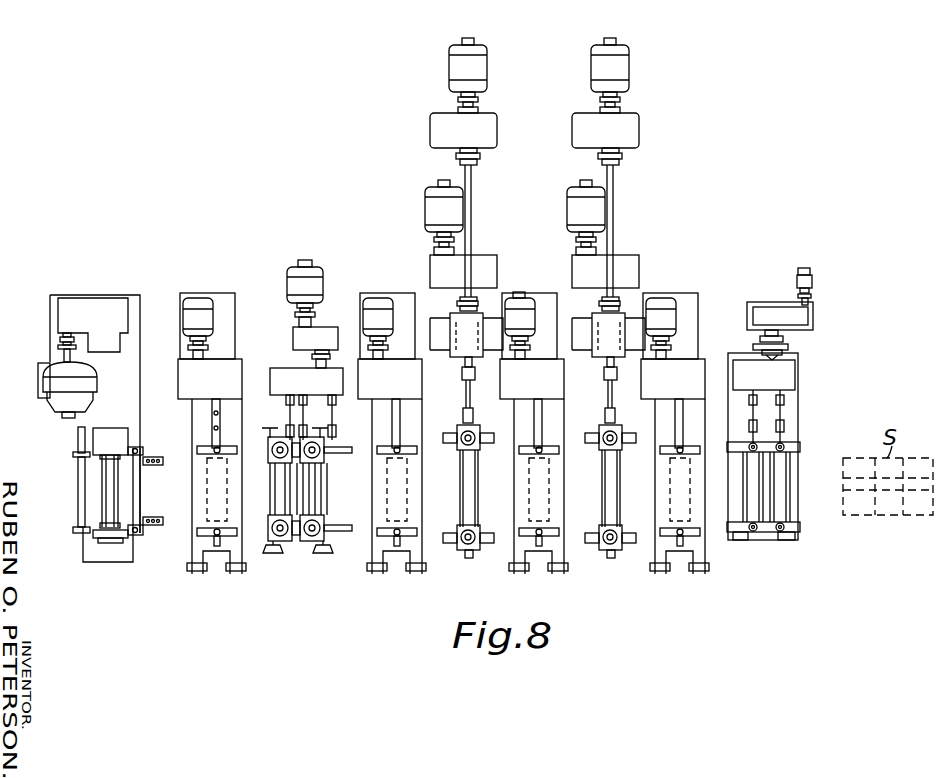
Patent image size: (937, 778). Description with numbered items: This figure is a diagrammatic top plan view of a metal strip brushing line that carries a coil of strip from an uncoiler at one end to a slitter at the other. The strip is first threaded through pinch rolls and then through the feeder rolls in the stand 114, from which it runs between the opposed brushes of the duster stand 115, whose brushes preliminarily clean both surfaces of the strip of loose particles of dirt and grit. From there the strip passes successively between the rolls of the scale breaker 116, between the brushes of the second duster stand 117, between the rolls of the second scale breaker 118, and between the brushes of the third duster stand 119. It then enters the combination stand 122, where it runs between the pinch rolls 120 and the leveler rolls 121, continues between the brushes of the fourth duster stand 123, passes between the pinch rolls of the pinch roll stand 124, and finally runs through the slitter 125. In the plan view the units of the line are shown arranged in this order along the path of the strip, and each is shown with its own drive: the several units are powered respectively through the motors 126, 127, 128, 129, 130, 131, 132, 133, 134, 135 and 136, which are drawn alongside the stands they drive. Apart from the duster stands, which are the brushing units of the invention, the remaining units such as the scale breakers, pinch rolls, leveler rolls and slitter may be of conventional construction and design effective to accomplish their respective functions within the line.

The stand 114 is at (790, 417).
The duster stand 115 is at (710, 543).
The scale breaker 116 is at (618, 553).
The second duster stand 117 is at (564, 538).
The second scale breaker 118 is at (478, 553).
The third duster stand 119 is at (422, 545).
The pinch rolls 120 is at (328, 488).
The leveler rolls 121 is at (280, 487).
The combination stand 122 is at (337, 538).
The fourth duster stand 123 is at (237, 540).
The pinch roll stand 124 is at (143, 533).
The slitter 125 is at (97, 538).
The motor 126 is at (795, 279).
The motor 127 is at (665, 313).
The motor 128 is at (603, 63).
The motor 129 is at (576, 208).
The motor 130 is at (523, 307).
The motor 131 is at (462, 63).
The motor 132 is at (432, 205).
The motor 133 is at (373, 313).
The motor 134 is at (298, 287).
The motor 135 is at (198, 311).
The motor 136 is at (48, 380).